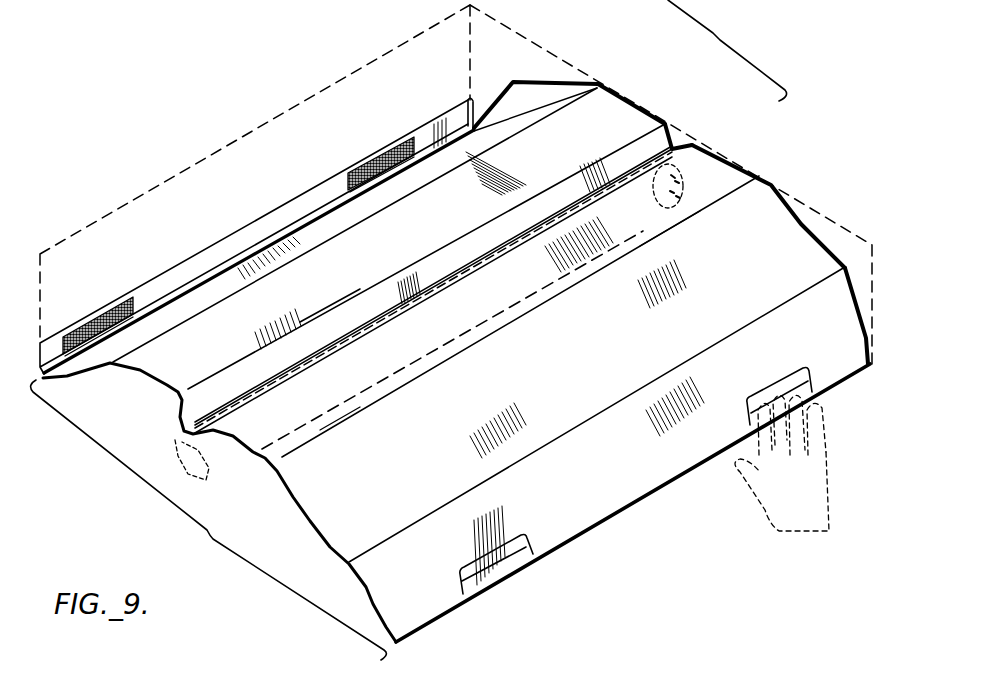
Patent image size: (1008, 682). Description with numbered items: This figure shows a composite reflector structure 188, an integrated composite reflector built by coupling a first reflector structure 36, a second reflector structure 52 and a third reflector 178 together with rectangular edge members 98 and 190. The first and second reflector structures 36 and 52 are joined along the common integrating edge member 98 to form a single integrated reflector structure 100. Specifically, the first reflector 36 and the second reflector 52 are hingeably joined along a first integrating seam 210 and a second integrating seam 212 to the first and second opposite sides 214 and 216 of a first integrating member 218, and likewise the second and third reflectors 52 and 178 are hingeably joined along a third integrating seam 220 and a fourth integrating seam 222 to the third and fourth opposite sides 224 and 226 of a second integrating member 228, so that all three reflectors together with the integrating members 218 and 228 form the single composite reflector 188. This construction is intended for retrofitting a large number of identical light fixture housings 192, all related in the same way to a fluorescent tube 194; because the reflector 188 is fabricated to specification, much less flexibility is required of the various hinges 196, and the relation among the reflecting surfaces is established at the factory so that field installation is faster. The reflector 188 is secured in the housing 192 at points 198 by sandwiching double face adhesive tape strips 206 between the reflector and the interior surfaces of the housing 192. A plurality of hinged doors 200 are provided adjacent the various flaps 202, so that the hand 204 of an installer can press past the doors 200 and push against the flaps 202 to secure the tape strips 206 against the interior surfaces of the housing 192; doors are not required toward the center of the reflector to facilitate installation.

The first reflector structure 36 is at (549, 82).
The second reflector structure 52 is at (670, 137).
The common integrating edge member 98 is at (637, 95).
The single integrated reflector structure 100 is at (727, 50).
The third reflector 178 is at (806, 205).
The composite reflector structure 188 is at (209, 520).
The rectangular edge member 190 is at (745, 172).
The light fixture housing 192 is at (432, 30).
The fluorescent tube 194 is at (488, 320).
The hinges 196 is at (515, 89).
The securing points 198 is at (649, 88).
The hinged doors 200 is at (509, 544).
The flaps 202 is at (282, 218).
The hand of installer 204 is at (763, 522).
The tape strips 206 is at (400, 138).
The first integrating seam 210 is at (234, 296).
The second integrating seam 212 is at (364, 296).
The first side of first integrating member 214 is at (177, 336).
The second side of first integrating member 216 is at (191, 386).
The first integrating member 218 is at (388, 263).
The third integrating seam 220 is at (691, 152).
The fourth integrating seam 222 is at (684, 223).
The third side of second integrating member 224 is at (238, 420).
The fourth side of second integrating member 226 is at (337, 416).
The second integrating member 228 is at (402, 380).